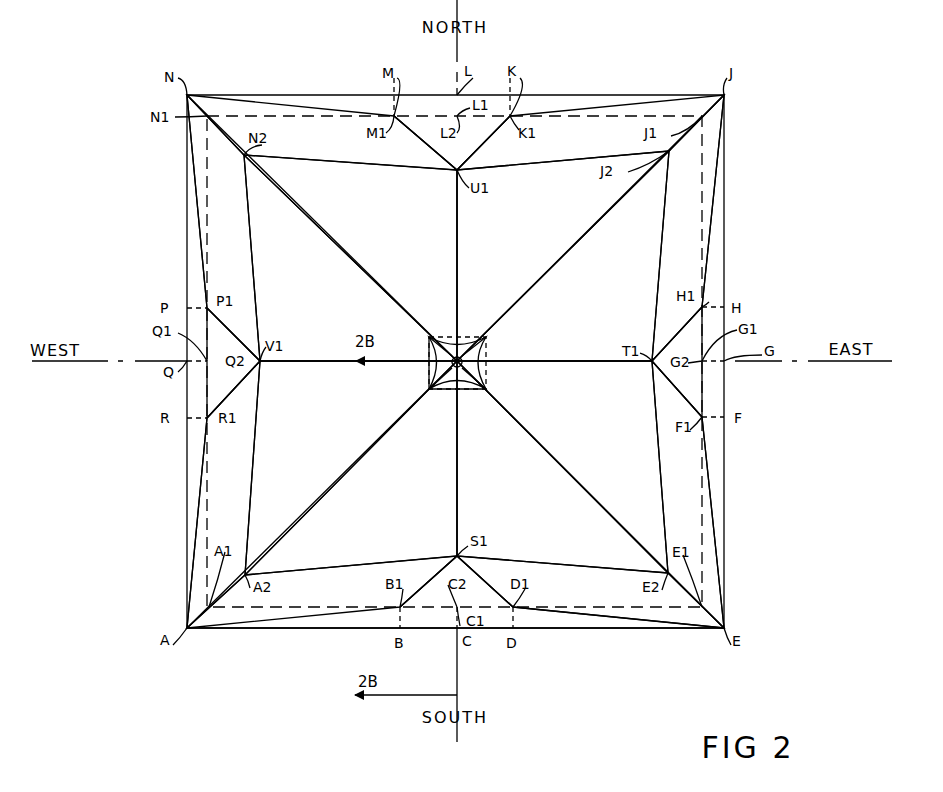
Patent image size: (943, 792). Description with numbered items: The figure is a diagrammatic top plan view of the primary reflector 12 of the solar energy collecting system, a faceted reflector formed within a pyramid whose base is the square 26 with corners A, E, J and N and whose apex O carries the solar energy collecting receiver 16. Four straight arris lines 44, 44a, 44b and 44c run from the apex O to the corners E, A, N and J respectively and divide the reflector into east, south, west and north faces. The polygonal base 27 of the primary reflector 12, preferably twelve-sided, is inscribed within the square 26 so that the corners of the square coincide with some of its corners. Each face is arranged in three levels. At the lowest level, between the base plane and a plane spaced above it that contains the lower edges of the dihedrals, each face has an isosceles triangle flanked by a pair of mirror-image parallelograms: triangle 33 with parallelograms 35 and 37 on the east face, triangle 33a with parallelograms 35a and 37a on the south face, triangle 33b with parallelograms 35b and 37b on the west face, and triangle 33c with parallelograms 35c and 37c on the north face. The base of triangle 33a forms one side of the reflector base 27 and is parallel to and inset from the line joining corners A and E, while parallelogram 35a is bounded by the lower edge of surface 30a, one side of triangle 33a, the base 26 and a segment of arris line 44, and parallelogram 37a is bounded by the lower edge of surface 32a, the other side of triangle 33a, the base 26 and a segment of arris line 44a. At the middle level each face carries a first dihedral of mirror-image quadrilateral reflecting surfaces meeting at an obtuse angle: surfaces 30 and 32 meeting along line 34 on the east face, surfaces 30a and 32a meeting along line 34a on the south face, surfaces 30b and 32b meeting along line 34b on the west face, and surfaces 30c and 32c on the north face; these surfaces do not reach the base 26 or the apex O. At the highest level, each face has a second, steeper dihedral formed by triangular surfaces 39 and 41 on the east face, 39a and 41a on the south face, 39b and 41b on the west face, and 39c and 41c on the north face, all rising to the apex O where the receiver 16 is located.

The primary reflector 12 is at (256, 680).
The solar energy collecting receiver 16 is at (452, 350).
The pyramid base 26 is at (362, 633).
The primary reflector base 27 is at (583, 618).
The reflecting surface 30 is at (563, 256).
The reflecting surface 30a is at (562, 467).
The reflecting surface 30b is at (351, 468).
The reflecting surface 30c is at (350, 258).
The reflecting surface 32 is at (562, 467).
The reflecting surface 32a is at (351, 468).
The reflecting surface 32b is at (350, 258).
The reflecting surface 32c is at (563, 256).
The isosceles triangle reflecting surface 33 is at (679, 342).
The isosceles triangle reflecting surface 33a is at (496, 612).
The isosceles triangle reflecting surface 33b is at (224, 340).
The isosceles triangle reflecting surface 33c is at (450, 172).
The line of intersection 34 is at (583, 361).
The line of intersection 34a is at (457, 452).
The line of intersection 34b is at (300, 361).
The parallelogram reflecting surface 35 is at (688, 228).
The parallelogram reflecting surface 35a is at (590, 592).
The parallelogram reflecting surface 35b is at (223, 494).
The parallelogram reflecting surface 35c is at (322, 132).
The parallelogram reflecting surface 37 is at (688, 494).
The parallelogram reflecting surface 37a is at (322, 592).
The parallelogram reflecting surface 37b is at (223, 228).
The parallelogram reflecting surface 37c is at (590, 132).
The reflecting surface 39 is at (490, 354).
The reflecting surface 39a is at (470, 382).
The reflecting surface 39b is at (441, 366).
The reflecting surface 39c is at (445, 342).
The reflecting surface 41 is at (488, 366).
The reflecting surface 41a is at (451, 380).
The reflecting surface 41b is at (428, 358).
The reflecting surface 41c is at (472, 342).
The arris line 44 is at (598, 503).
The arris line 44a is at (347, 471).
The arris line 44b is at (332, 237).
The arris line 44c is at (591, 236).